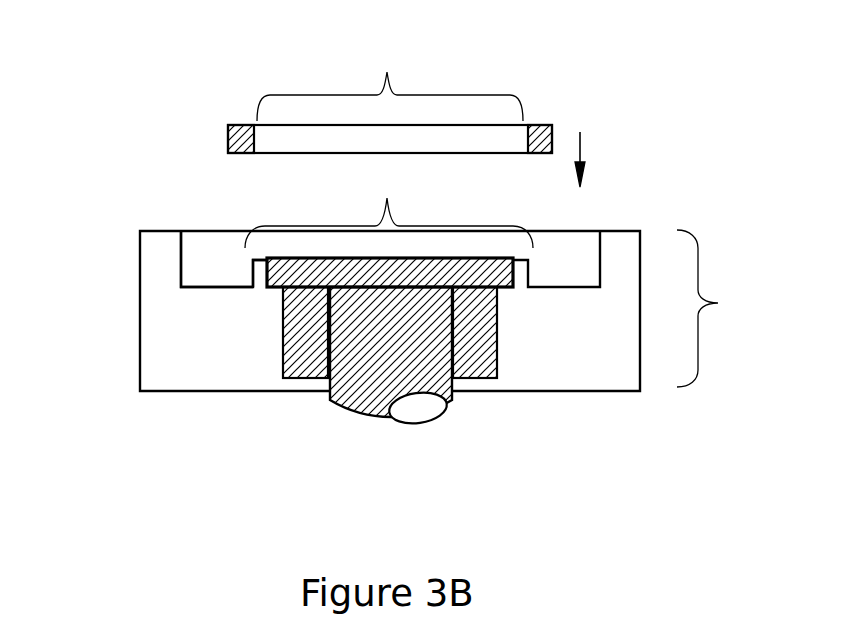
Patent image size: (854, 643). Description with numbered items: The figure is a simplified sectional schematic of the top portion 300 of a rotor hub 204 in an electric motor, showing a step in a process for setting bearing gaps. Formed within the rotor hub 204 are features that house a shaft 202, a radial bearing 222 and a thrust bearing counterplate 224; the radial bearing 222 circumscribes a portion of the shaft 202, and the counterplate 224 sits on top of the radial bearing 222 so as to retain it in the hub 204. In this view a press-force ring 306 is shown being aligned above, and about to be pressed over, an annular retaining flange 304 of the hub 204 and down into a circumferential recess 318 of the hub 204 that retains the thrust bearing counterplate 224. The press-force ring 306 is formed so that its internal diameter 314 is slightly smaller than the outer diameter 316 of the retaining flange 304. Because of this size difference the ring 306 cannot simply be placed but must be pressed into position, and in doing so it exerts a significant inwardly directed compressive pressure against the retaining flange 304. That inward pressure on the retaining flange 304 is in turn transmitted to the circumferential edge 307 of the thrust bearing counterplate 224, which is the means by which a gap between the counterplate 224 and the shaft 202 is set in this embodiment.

The shaft 202 is at (423, 407).
The rotor hub 204 is at (178, 380).
The radial bearing 222 is at (497, 352).
The thrust bearing counterplate 224 is at (493, 258).
The top portion of the rotor hub 300 is at (731, 308).
The annular retaining flange 304 is at (258, 259).
The press-force ring 306 is at (542, 127).
The circumferential edge 307 is at (255, 278).
The internal diameter of the ring 314 is at (258, 128).
The outer diameter of the retaining flange 316 is at (389, 210).
The circumferential recess 318 is at (236, 278).